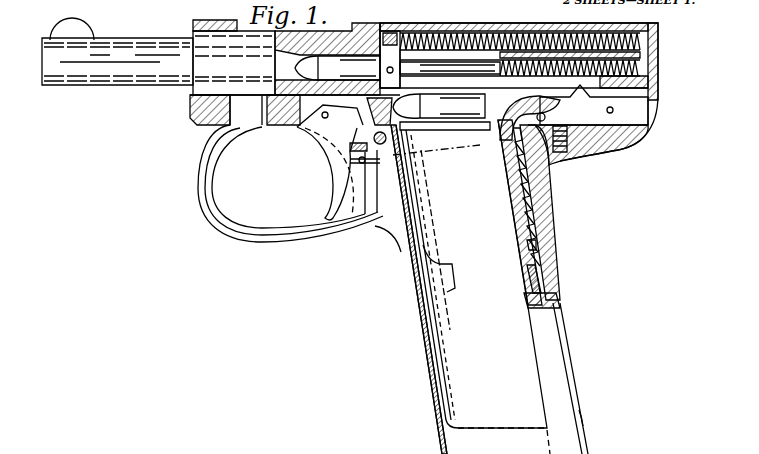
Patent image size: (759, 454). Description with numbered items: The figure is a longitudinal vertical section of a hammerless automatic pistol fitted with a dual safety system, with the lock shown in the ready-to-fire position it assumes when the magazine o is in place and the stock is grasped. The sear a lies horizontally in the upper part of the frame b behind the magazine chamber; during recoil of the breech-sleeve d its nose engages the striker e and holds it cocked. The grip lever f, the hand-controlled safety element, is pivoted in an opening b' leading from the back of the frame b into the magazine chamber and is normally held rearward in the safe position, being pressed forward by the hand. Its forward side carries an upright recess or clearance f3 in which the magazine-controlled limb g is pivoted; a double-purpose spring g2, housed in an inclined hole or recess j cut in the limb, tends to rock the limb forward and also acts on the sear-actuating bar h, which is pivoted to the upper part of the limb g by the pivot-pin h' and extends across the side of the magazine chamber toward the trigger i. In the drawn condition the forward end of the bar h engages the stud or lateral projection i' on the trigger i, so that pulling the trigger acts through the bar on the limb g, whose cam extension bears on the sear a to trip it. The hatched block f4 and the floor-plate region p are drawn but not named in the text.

The sear a is at (582, 105).
The frame b is at (604, 132).
The opening b' is at (578, 370).
The breech-sleeve d is at (514, 22).
The striker e is at (396, 44).
The grip lever f is at (548, 187).
The recess or clearance f3 is at (536, 243).
The spring seat block f4 is at (526, 285).
The magazine-controlled limb g is at (508, 182).
The spring g2 is at (517, 207).
The sear-actuating bar h is at (470, 274).
The pivot-pin h' is at (443, 137).
The trigger i is at (330, 162).
The stud or lateral projection i' is at (341, 152).
The inclined hole or recess j is at (556, 150).
The magazine o is at (420, 289).
The magazine floor plate p is at (510, 440).